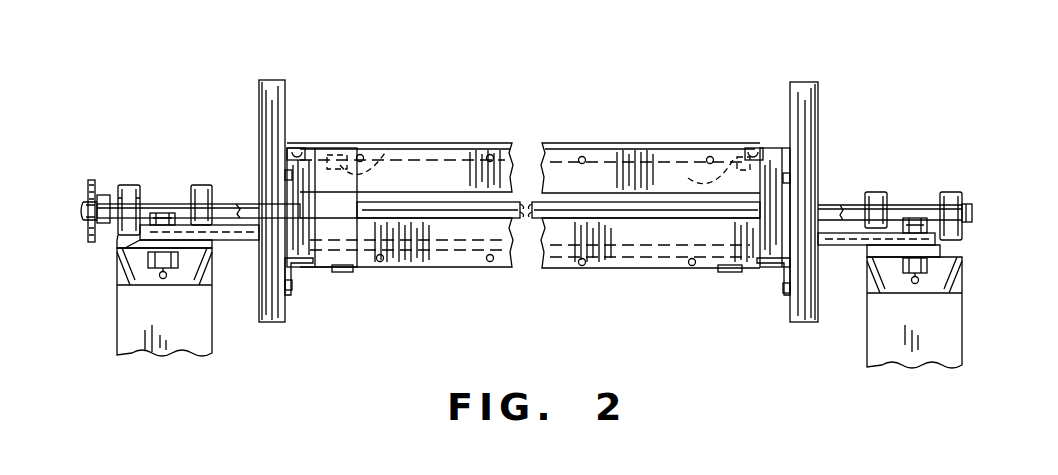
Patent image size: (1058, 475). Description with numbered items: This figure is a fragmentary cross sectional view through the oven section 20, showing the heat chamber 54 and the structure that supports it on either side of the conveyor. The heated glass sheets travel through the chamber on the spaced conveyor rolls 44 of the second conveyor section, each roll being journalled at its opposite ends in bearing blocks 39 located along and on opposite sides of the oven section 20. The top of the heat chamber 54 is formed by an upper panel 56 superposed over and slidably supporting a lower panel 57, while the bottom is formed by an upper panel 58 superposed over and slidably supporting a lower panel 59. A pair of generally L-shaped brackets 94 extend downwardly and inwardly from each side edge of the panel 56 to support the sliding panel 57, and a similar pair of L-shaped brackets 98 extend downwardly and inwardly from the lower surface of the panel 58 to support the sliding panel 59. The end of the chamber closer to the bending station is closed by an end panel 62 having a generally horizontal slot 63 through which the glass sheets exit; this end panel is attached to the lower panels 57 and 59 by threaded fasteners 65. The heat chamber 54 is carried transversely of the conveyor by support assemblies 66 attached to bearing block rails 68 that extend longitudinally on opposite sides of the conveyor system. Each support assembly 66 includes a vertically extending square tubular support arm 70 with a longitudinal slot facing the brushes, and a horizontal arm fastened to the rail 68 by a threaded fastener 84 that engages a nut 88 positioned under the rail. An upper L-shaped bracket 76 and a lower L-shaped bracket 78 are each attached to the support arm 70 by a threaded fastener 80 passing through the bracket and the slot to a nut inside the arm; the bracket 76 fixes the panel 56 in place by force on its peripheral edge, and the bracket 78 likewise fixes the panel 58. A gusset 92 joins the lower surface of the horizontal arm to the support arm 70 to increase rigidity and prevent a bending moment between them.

The oven section 20 is at (578, 66).
The bearing blocks 39 is at (124, 186).
The conveyor rolls 44 is at (178, 204).
The heat chamber 54 is at (599, 119).
The upper panel 56 is at (429, 133).
The lower panel 57 is at (640, 150).
The upper panel 58 is at (445, 261).
The lower panel 59 is at (619, 276).
The end panel 62 is at (412, 235).
The slot 63 is at (434, 203).
The threaded fasteners 65 is at (492, 155).
The support assemblies 66 is at (247, 53).
The bearing block rails 68 is at (122, 262).
The support arm 70 is at (265, 112).
The upper bracket 76 is at (306, 148).
The lower bracket 78 is at (298, 260).
The threaded fastener 80 is at (295, 176).
The threaded fastener 84 is at (163, 208).
The nut 88 is at (150, 268).
The gusset 92 is at (262, 234).
The L-shaped brackets 94 is at (383, 142).
The L-shaped brackets 98 is at (340, 273).